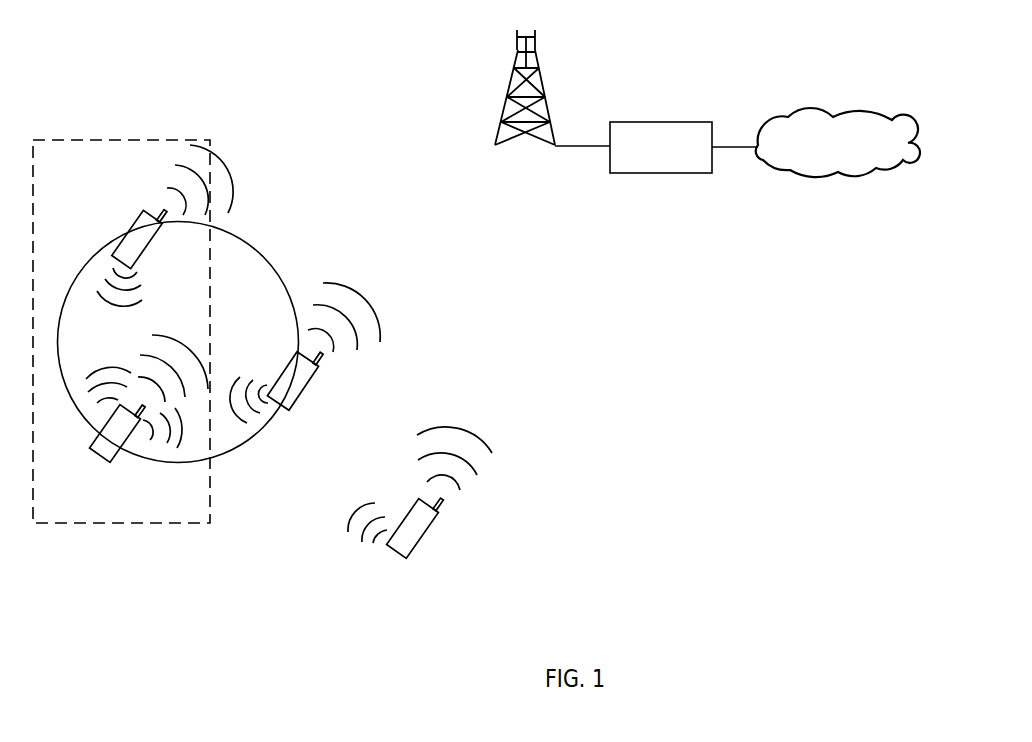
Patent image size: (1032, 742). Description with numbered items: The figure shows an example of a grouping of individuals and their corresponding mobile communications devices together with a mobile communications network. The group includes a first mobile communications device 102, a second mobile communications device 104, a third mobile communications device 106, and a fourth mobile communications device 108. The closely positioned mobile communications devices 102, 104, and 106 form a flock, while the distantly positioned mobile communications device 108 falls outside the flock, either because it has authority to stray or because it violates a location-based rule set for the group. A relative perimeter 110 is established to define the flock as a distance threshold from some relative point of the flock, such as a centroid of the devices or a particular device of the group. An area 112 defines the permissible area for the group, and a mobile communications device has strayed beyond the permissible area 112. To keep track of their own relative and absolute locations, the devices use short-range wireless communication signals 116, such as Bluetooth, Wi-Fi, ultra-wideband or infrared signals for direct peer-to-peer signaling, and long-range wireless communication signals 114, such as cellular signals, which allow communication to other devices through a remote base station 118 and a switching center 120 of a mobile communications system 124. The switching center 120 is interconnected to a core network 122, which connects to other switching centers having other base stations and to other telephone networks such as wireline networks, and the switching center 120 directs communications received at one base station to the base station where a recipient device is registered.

The first mobile communications device 102 is at (133, 226).
The second mobile communications device 104 is at (100, 456).
The third mobile communications device 106 is at (303, 387).
The fourth mobile communications device 108 is at (418, 540).
The relative perimeter 110 is at (251, 246).
The area 112 is at (135, 525).
The long-range wireless communication signals 114 is at (480, 478).
The short-range wireless communication signals 116 is at (343, 537).
The base station 118 is at (497, 124).
The switching center 120 is at (652, 120).
The core network 122 is at (880, 108).
The mobile communications system 124 is at (667, 220).